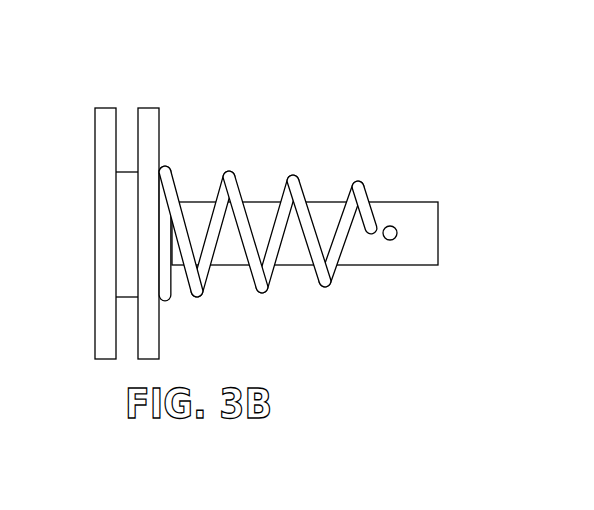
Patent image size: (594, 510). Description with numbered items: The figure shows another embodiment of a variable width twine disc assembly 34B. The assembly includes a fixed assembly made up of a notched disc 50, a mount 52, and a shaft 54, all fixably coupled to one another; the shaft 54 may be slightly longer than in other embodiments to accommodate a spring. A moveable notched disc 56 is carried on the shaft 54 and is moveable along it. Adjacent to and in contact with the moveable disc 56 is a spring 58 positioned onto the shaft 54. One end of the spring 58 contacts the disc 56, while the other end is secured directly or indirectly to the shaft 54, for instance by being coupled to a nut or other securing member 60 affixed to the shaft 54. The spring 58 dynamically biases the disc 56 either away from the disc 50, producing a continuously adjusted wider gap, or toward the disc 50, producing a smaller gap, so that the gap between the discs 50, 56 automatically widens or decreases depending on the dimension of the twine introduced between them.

The variable width twine disc assembly 34B is at (474, 131).
The notched disc 50 is at (98, 108).
The mount 52 is at (124, 171).
The shaft 54 is at (438, 240).
The moveable notched disc 56 is at (157, 108).
The spring 58 is at (293, 177).
The securing member 60 is at (392, 237).